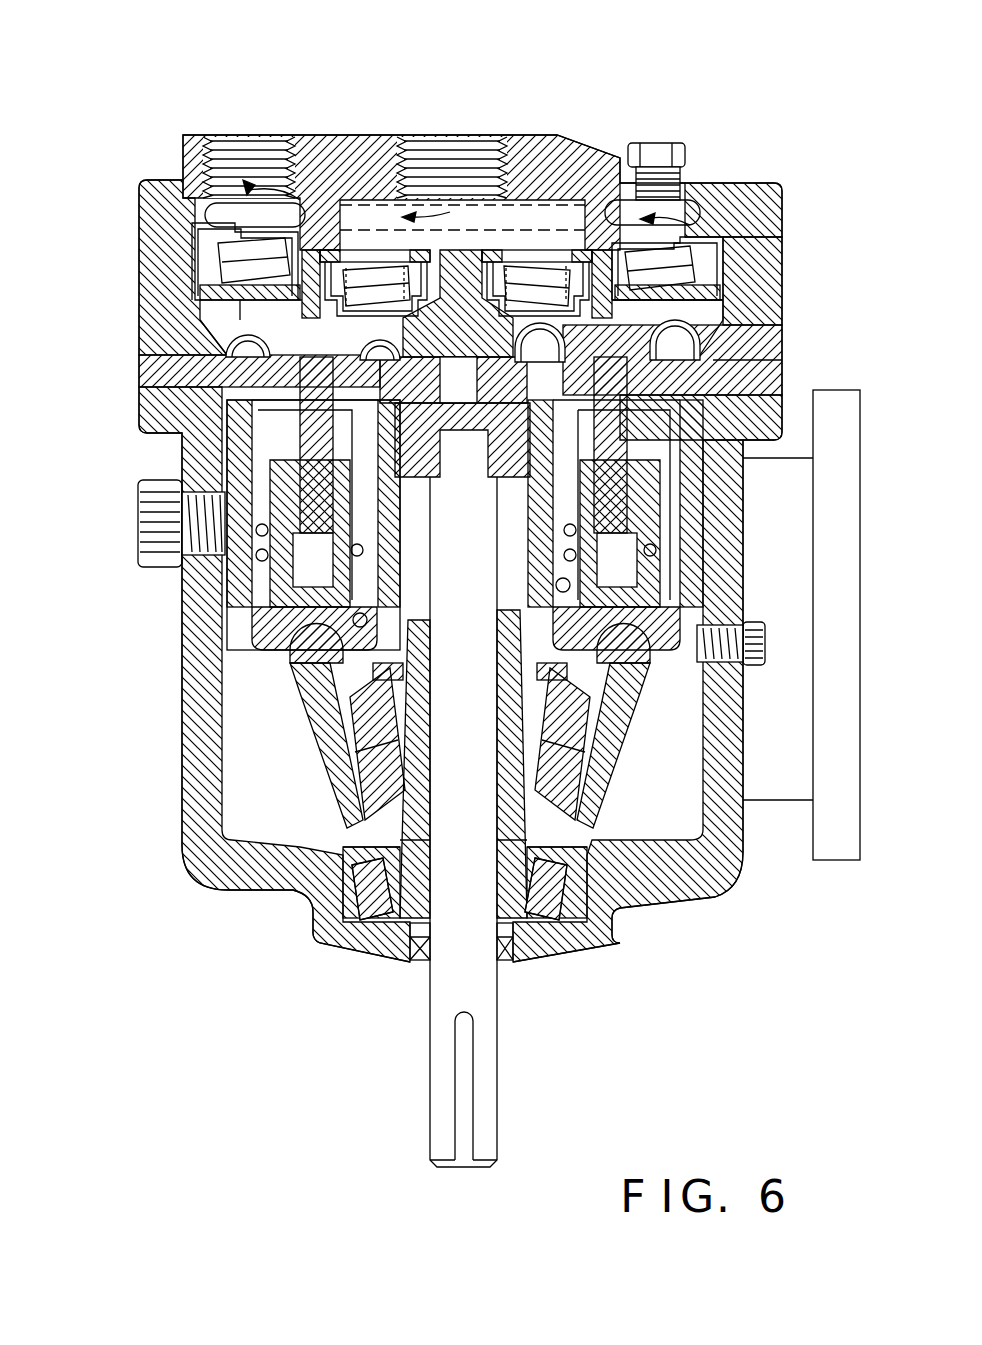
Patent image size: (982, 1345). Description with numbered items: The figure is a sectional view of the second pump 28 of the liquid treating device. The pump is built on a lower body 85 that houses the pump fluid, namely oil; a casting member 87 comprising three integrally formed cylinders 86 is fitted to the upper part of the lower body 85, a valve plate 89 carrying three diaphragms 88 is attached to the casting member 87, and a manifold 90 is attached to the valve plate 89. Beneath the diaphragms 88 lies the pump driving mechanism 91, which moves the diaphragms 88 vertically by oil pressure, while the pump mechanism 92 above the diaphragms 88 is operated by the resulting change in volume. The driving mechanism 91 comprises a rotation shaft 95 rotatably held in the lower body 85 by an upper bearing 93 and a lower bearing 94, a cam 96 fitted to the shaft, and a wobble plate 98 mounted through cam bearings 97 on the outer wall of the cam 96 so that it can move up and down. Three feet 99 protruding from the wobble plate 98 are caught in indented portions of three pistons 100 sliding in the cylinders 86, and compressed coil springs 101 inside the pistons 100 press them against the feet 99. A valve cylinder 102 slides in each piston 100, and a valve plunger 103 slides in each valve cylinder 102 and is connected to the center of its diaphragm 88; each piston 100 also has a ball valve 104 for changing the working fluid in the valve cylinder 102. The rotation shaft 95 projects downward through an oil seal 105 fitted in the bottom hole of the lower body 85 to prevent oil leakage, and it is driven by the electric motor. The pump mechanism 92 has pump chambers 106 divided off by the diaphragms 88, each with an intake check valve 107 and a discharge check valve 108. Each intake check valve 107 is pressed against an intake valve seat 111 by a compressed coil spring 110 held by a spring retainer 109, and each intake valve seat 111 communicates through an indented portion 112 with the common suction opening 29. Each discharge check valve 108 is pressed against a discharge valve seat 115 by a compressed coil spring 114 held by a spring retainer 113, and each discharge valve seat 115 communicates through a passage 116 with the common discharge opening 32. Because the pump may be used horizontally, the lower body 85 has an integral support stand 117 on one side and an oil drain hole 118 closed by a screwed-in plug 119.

The second pump 28 is at (657, 108).
The suction opening 29 is at (455, 147).
The discharge opening 32 is at (250, 148).
The lower body 85 is at (710, 860).
The cylinders 86 is at (237, 573).
The casting member 87 is at (757, 375).
The diaphragms 88 is at (230, 368).
The valve plate 89 is at (760, 278).
The housing flange 90 is at (765, 205).
The pump driving mechanism 91 is at (262, 660).
The pump mechanism 92 is at (197, 335).
The upper bearing 93 is at (483, 465).
The lower bearing 94 is at (545, 905).
The rotation shaft 95 is at (487, 1075).
The cam 96 is at (540, 828).
The cam bearings 97 is at (590, 772).
The wobble plate 98 is at (617, 703).
The feet 99 is at (303, 680).
The pistons 100 is at (285, 625).
The compressed coil springs 101 is at (300, 413).
The valve cylinder 102 is at (272, 597).
The valve plunger 103 is at (300, 441).
The ball valve 104 is at (555, 585).
The oil seal 105 is at (413, 965).
The pump chambers 106 is at (205, 305).
The intake check valve 107 is at (372, 255).
The discharge check valve 108 is at (200, 220).
The spring retainer 109 is at (360, 323).
The compressed coil spring 110 is at (362, 258).
The intake valve seat 111 is at (325, 255).
The indented portion 112 is at (477, 205).
The spring retainer 113 is at (210, 230).
The compressed coil spring 114 is at (195, 232).
The discharge valve seat 115 is at (195, 262).
The passage 116 is at (238, 197).
The support stand 117 is at (835, 862).
The oil drain hole 118 is at (720, 628).
The plug 119 is at (752, 663).